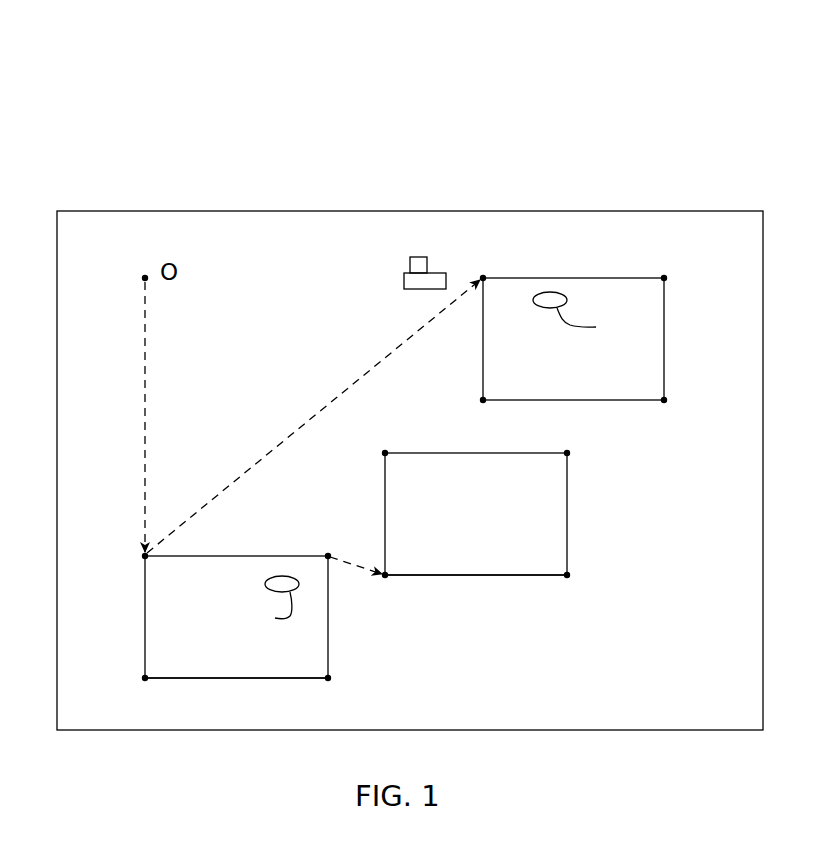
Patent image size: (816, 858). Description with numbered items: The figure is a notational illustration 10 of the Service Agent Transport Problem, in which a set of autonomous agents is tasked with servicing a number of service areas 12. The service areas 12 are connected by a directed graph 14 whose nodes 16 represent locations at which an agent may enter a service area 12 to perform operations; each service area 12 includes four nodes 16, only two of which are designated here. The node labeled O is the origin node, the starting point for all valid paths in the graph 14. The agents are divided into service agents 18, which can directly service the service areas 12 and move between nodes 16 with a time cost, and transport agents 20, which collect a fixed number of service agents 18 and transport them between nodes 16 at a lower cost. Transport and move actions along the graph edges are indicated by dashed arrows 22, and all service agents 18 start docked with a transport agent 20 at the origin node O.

The notational illustration 10 is at (667, 113).
The service area 12 is at (204, 653).
The directed graph 14 is at (368, 211).
The node 16 is at (331, 678).
The service agent 18 is at (435, 462).
The transport agent 20 is at (418, 290).
The dashed arrows 22 is at (313, 418).